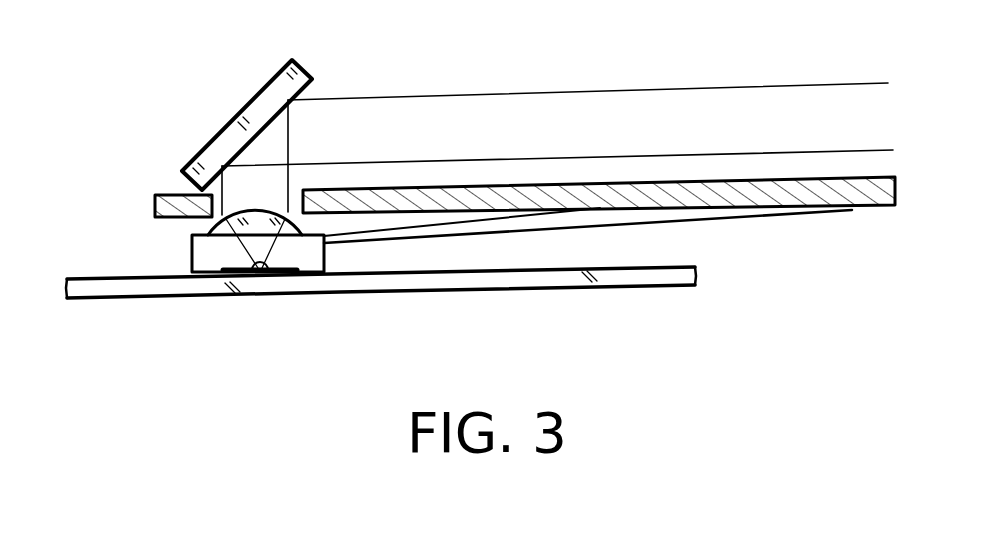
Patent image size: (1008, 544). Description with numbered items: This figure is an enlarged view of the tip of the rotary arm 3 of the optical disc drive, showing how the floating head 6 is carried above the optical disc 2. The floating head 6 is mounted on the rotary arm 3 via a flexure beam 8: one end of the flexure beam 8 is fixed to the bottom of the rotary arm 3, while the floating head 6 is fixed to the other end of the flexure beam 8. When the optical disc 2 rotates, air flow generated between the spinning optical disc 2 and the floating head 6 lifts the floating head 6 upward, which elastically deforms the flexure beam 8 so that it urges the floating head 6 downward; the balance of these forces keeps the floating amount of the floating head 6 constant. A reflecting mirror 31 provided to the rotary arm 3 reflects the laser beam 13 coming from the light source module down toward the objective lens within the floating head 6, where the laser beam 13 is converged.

The optical disc 2 is at (432, 283).
The rotary arm 3 is at (866, 200).
The floating head 6 is at (156, 244).
The flexure beam 8 is at (575, 219).
The laser beam 13 is at (560, 110).
The reflecting mirror 31 is at (257, 96).